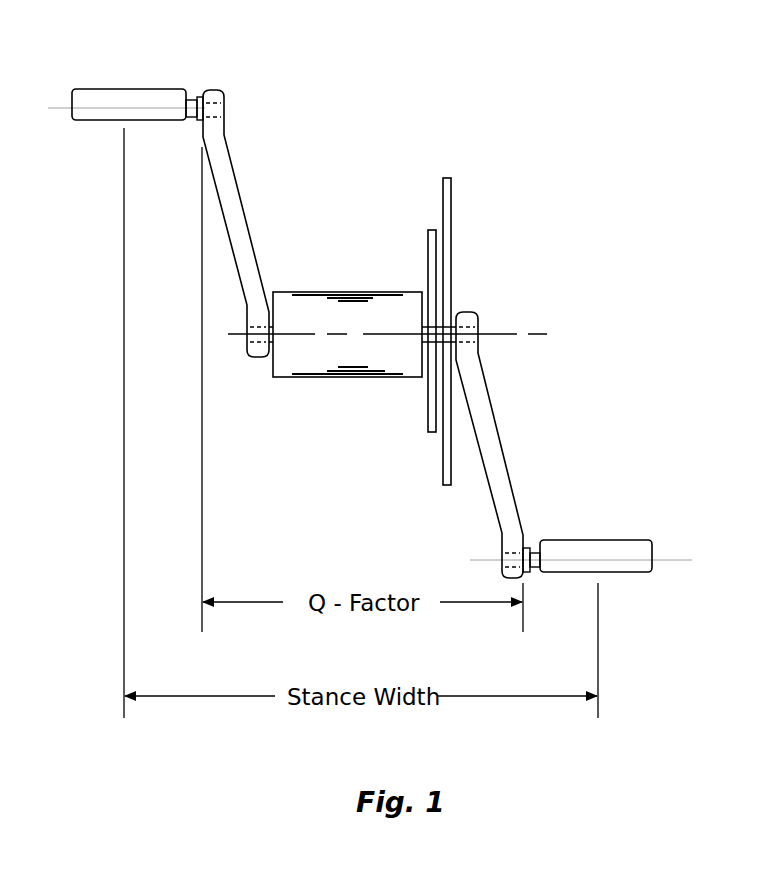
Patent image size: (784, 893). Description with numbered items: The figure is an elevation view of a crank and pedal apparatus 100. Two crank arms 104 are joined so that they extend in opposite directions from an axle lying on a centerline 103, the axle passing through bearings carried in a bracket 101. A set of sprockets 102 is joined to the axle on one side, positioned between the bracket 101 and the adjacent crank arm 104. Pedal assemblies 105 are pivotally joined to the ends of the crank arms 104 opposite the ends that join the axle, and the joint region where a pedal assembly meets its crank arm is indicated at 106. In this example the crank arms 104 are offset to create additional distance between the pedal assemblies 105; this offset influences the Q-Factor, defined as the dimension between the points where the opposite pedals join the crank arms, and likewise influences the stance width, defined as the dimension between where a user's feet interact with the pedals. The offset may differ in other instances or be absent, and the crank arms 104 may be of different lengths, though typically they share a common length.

The crank and pedal apparatus 100 is at (363, 135).
The bracket 101 is at (347, 373).
The set of sprockets 102 is at (452, 220).
The centerline 103 is at (540, 332).
The crank arms 104 is at (242, 195).
The pedal assemblies 105 is at (105, 92).
The pedal spindle 106 is at (478, 558).